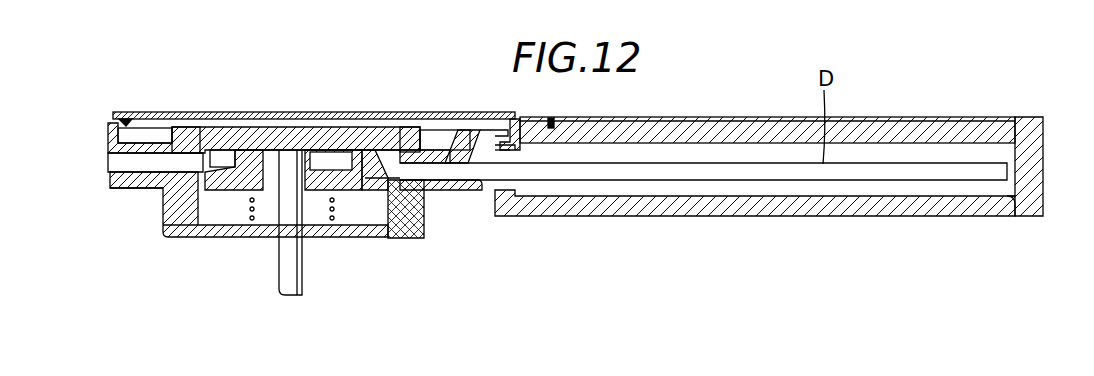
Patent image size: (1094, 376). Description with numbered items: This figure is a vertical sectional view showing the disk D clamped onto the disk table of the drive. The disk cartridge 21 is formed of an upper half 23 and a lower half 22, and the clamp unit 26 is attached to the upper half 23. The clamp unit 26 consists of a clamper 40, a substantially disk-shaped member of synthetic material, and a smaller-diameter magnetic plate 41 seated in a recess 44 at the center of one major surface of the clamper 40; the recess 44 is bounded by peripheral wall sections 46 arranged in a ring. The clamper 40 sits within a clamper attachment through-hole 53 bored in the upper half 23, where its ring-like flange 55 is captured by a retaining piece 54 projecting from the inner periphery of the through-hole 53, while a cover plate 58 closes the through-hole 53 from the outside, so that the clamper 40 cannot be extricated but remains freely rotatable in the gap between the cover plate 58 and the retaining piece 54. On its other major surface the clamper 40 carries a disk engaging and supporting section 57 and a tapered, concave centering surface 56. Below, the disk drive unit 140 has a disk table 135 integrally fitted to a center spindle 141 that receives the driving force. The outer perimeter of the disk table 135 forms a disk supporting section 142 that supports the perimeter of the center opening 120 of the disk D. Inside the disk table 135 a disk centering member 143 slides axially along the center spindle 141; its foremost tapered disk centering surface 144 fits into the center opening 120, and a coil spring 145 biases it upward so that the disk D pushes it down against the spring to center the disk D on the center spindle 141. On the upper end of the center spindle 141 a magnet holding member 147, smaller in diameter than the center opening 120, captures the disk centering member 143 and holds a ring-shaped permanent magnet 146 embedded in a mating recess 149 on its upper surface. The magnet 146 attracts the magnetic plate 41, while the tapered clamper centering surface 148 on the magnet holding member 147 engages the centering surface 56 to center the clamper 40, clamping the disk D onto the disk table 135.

The disk cartridge 21 is at (794, 138).
The lower half 22 is at (1040, 200).
The upper half 23 is at (963, 130).
The clamp unit 26 is at (117, 123).
The clamper 40 is at (108, 138).
The magnetic plate 41 is at (245, 140).
The recess 44 is at (218, 150).
The peripheral wall sections 46 is at (192, 138).
The clamper attachment through-hole 53 is at (516, 119).
The retaining piece 54 is at (503, 152).
The flange 55 is at (502, 129).
The centering surface 56 is at (398, 160).
The disk engaging and supporting section 57 is at (462, 160).
The cover plate 58 is at (150, 128).
The center opening 120 is at (405, 212).
The disk table 135 is at (170, 220).
The disk drive unit 140 is at (262, 265).
The center spindle 141 is at (302, 270).
The disk supporting section 142 is at (458, 192).
The disk centering member 143 is at (358, 192).
The disk centering surface 144 is at (165, 182).
The coil spring 145 is at (250, 214).
The permanent magnet 146 is at (288, 150).
The magnet holding member 147 is at (176, 236).
The clamper centering surface 148 is at (412, 200).
The mating recess 149 is at (320, 152).